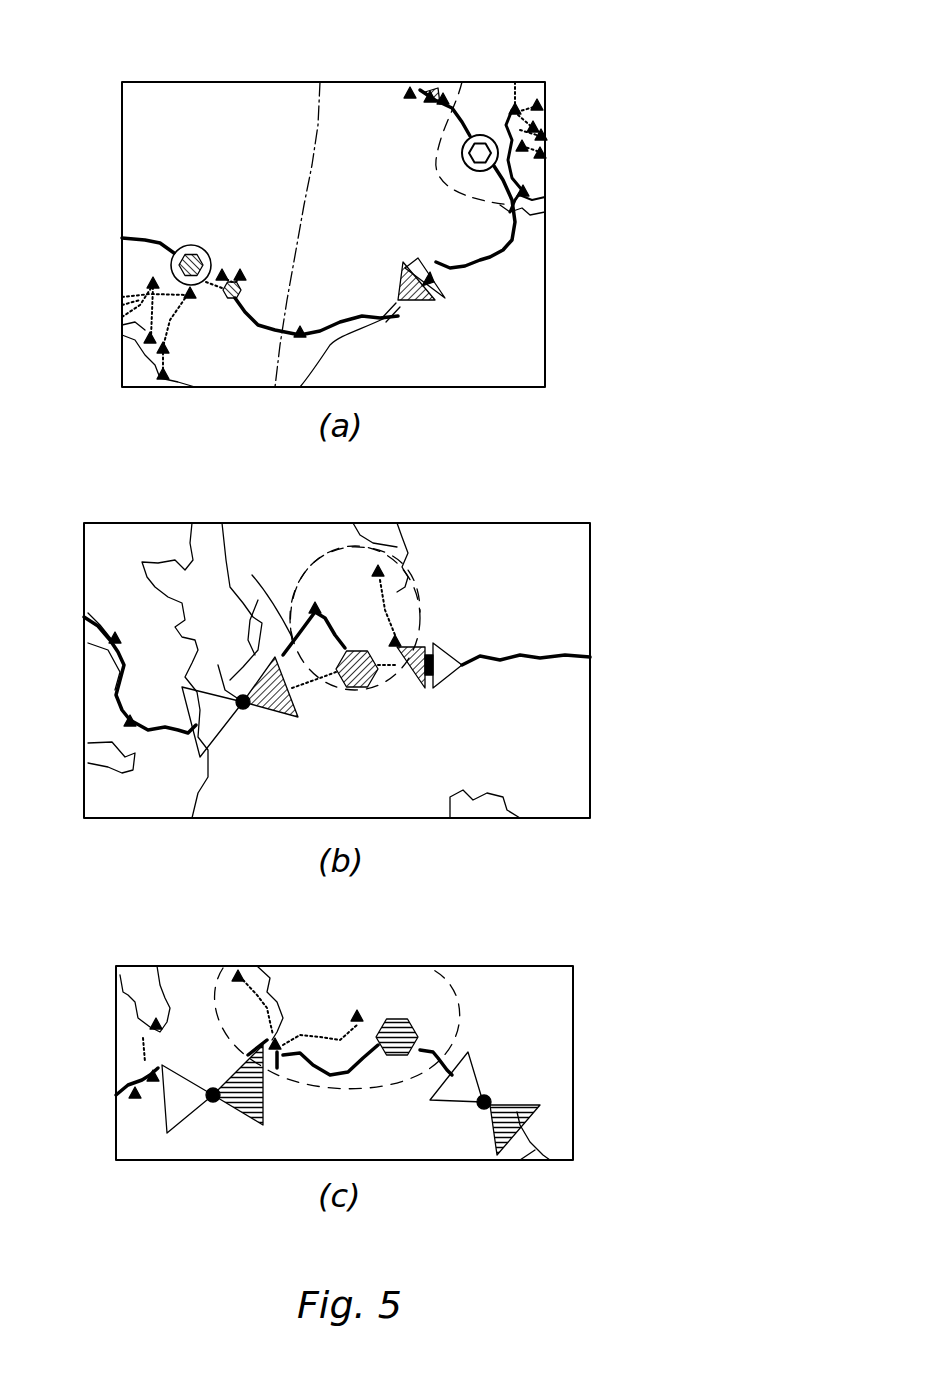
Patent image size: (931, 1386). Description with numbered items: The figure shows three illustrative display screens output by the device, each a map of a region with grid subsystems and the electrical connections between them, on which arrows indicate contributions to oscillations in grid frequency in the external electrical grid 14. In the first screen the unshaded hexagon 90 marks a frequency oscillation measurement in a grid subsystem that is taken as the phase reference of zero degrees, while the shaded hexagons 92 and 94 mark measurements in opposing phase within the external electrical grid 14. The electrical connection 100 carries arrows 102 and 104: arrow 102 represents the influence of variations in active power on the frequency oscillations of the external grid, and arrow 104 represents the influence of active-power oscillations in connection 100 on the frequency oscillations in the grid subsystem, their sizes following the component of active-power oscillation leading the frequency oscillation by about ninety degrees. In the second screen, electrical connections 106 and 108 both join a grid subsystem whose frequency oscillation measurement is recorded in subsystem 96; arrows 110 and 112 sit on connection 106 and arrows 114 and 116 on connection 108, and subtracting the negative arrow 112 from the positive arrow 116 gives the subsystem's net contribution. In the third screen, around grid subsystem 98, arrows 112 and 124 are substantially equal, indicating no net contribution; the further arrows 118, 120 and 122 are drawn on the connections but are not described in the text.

The external electrical grid 14 is at (316, 145).
The unshaded hexagon 90 is at (480, 135).
The shaded hexagon 92 is at (195, 250).
The shaded hexagon 94 is at (232, 300).
The grid subsystem 96 is at (354, 648).
The grid subsystem 98 is at (415, 1022).
The electrical connection 100 is at (400, 318).
The arrow 102 is at (403, 282).
The arrow 104 is at (423, 257).
The electrical connection 106 is at (250, 602).
The electrical connection 108 is at (537, 660).
The arrow 110 is at (250, 708).
The arrow 112 is at (205, 730).
The arrow 114 is at (420, 690).
The arrow 116 is at (447, 652).
The hatched triangle symbol 118 is at (255, 1130).
The hatched triangle symbol 120 is at (522, 1100).
The triangle symbol 122 is at (175, 1115).
The arrow 124 is at (452, 1092).